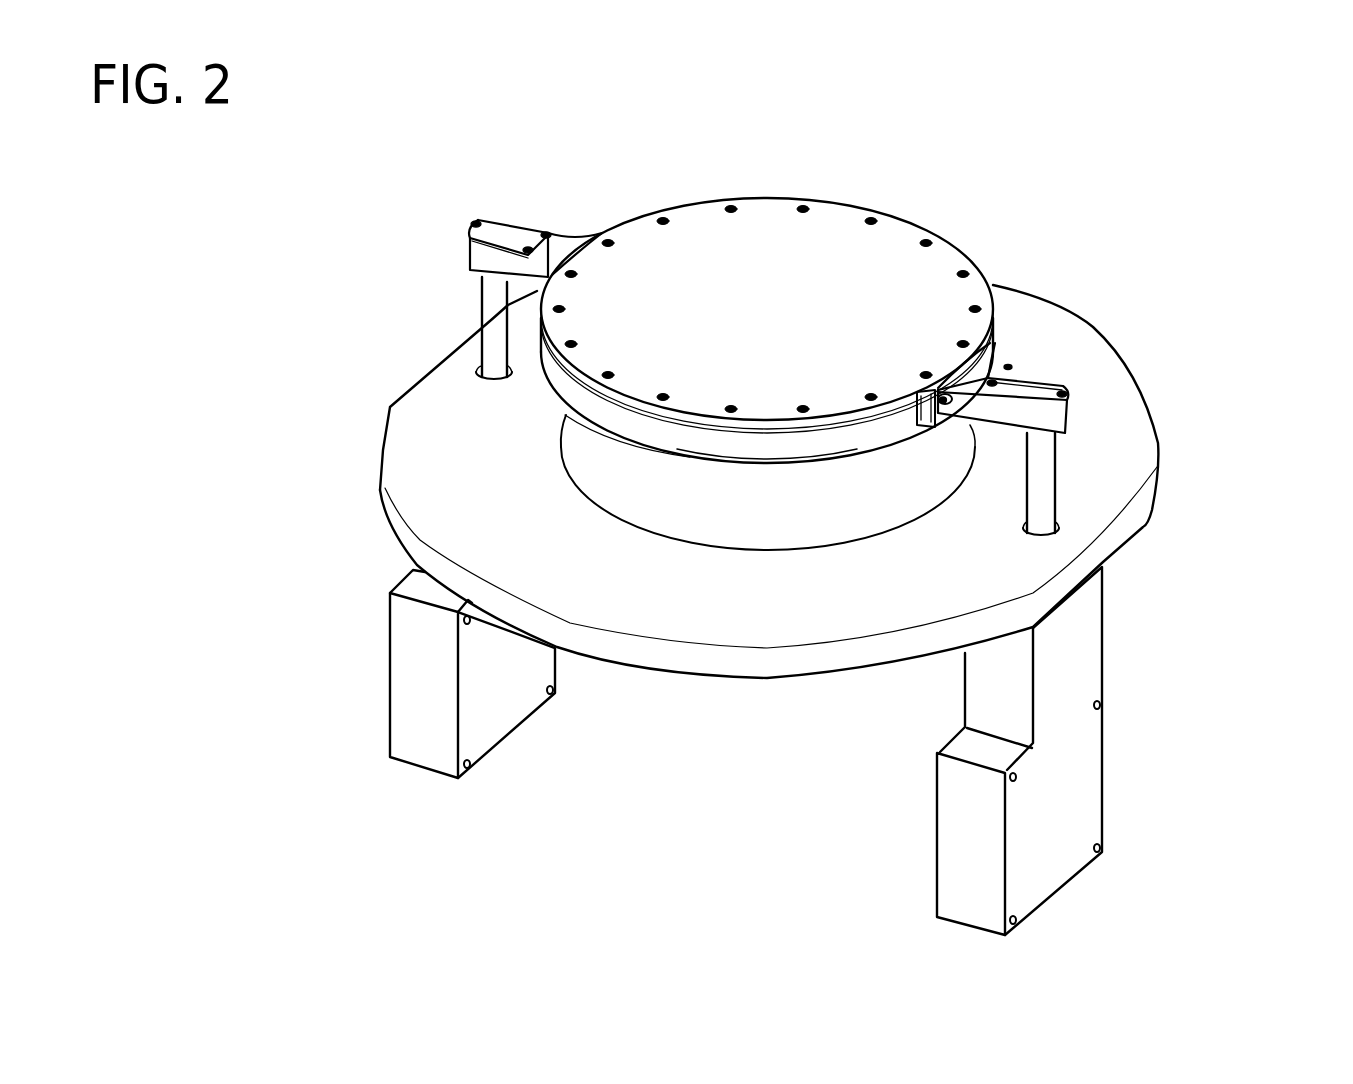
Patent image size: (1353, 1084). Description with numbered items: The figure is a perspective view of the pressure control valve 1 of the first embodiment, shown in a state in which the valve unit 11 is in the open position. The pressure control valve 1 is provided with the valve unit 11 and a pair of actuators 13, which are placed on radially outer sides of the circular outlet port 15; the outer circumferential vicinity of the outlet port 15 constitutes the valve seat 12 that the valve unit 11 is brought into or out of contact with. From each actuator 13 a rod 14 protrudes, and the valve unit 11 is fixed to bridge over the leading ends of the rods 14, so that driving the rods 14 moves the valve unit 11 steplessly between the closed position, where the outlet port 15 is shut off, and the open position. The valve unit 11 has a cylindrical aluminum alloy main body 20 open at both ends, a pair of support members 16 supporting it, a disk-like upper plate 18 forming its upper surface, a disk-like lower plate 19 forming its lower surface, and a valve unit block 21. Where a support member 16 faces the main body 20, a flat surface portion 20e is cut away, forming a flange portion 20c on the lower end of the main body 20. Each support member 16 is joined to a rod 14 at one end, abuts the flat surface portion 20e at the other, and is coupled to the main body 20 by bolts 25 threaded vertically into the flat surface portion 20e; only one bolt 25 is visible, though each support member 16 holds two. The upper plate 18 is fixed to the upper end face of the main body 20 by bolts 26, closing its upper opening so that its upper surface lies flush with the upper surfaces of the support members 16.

The pressure control valve 1 is at (1197, 308).
The valve unit 11 is at (985, 238).
The valve seat 12 is at (550, 468).
The actuator 13 is at (407, 655).
The rod 14 is at (492, 313).
The outlet port 15 is at (747, 543).
The support member 16 is at (508, 228).
The upper plate 18 is at (831, 218).
The lower plate 19 is at (680, 452).
The main body 20 is at (817, 440).
The flange portion 20c is at (925, 420).
The flat surface portion 20e is at (955, 412).
The valve unit block 21 is at (733, 463).
The bolt 25 is at (948, 402).
The bolt 26 is at (733, 203).